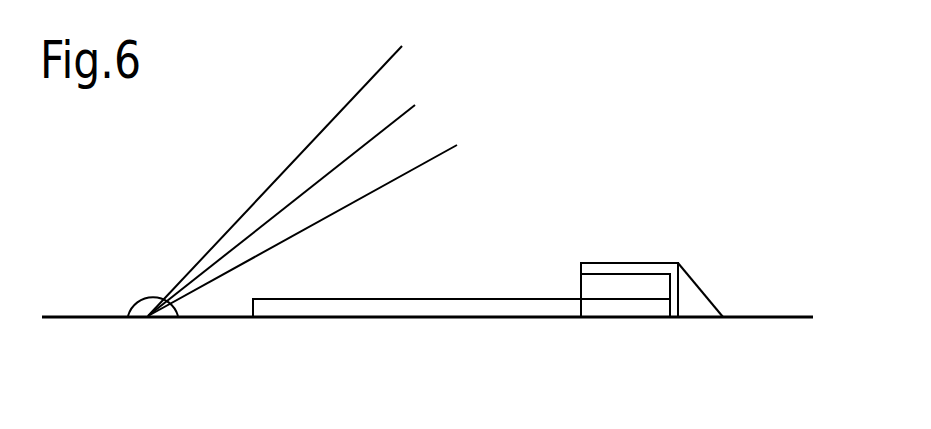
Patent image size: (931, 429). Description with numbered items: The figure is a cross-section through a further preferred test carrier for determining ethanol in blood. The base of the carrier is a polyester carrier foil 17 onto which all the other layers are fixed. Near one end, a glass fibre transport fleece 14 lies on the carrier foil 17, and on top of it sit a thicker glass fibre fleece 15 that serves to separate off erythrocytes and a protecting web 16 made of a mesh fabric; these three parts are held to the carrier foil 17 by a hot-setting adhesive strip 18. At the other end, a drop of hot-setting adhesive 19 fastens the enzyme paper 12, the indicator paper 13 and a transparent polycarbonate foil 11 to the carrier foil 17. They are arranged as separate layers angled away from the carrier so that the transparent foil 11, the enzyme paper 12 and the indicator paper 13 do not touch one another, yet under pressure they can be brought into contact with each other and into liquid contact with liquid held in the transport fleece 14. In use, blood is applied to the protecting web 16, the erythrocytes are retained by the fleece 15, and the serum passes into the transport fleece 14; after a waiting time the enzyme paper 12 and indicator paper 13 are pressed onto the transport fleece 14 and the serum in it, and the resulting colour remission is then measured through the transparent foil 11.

The transparent polycarbonate foil 11 is at (385, 63).
The enzyme paper 12 is at (405, 112).
The indicator paper 13 is at (408, 173).
The transport fleece 14 is at (413, 318).
The fleece to separate off erythrocytes 15 is at (590, 285).
The protecting web 16 is at (642, 262).
The carrier foil 17 is at (770, 318).
The hot-setting adhesive strip 18 is at (697, 287).
The drop of hot-setting adhesive 19 is at (138, 309).